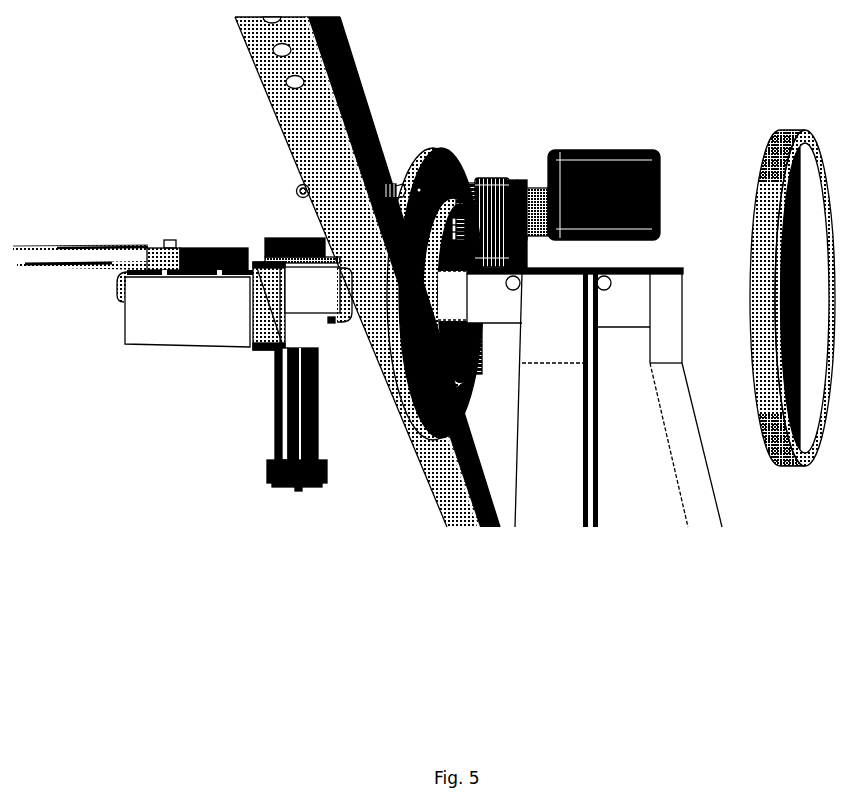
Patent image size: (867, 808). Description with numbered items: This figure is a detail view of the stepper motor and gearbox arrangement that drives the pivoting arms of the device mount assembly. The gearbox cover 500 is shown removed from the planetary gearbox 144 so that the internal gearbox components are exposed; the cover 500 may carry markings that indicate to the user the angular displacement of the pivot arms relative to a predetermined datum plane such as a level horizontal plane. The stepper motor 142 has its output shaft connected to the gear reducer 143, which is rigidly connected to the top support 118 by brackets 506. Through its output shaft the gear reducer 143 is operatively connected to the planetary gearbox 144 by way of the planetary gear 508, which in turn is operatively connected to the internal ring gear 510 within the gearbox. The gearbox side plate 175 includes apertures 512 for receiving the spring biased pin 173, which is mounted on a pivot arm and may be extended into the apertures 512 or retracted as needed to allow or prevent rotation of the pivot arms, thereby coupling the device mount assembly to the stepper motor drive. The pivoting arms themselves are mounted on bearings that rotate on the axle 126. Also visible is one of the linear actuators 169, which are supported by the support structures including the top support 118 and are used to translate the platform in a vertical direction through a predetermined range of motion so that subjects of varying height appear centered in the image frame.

The planetary gearbox 144 is at (459, 238).
The gearbox side plate 175 is at (430, 146).
The apertures 512 is at (440, 148).
The internal ring gear 510 is at (466, 168).
The planetary gear 508 is at (472, 183).
The gear reducer 143 is at (517, 178).
The stepper motor 142 is at (612, 146).
The brackets 506 is at (528, 264).
The top support 118 is at (664, 285).
The axle 126 is at (478, 362).
The spring biased pin 173 is at (296, 191).
The linear actuators 169 is at (277, 433).
The gearbox cover 500 is at (818, 134).